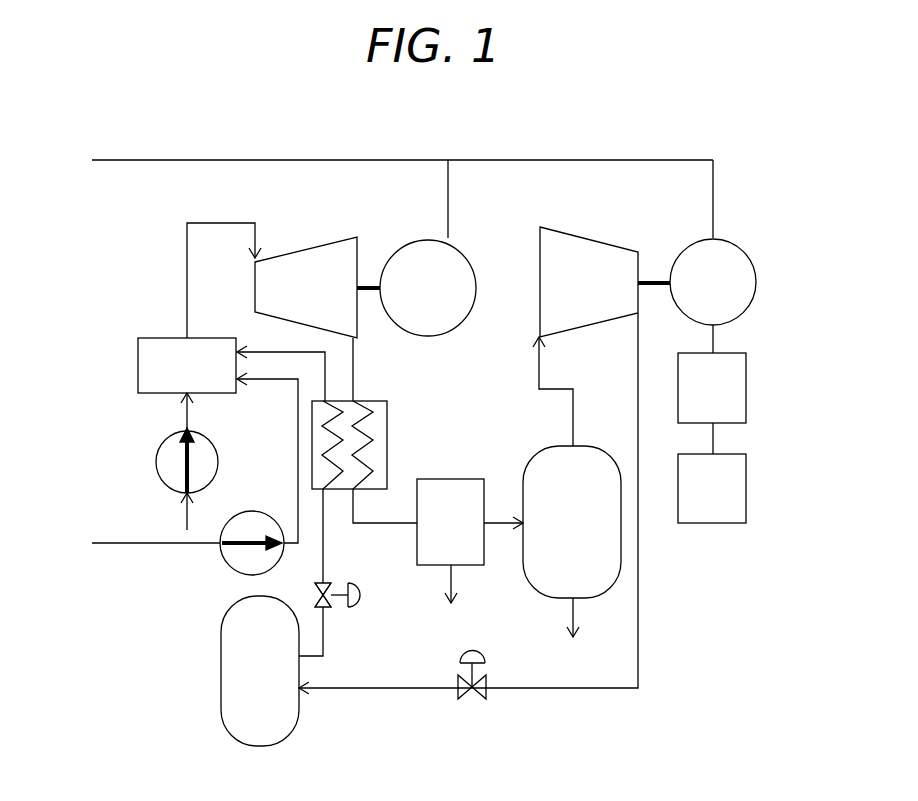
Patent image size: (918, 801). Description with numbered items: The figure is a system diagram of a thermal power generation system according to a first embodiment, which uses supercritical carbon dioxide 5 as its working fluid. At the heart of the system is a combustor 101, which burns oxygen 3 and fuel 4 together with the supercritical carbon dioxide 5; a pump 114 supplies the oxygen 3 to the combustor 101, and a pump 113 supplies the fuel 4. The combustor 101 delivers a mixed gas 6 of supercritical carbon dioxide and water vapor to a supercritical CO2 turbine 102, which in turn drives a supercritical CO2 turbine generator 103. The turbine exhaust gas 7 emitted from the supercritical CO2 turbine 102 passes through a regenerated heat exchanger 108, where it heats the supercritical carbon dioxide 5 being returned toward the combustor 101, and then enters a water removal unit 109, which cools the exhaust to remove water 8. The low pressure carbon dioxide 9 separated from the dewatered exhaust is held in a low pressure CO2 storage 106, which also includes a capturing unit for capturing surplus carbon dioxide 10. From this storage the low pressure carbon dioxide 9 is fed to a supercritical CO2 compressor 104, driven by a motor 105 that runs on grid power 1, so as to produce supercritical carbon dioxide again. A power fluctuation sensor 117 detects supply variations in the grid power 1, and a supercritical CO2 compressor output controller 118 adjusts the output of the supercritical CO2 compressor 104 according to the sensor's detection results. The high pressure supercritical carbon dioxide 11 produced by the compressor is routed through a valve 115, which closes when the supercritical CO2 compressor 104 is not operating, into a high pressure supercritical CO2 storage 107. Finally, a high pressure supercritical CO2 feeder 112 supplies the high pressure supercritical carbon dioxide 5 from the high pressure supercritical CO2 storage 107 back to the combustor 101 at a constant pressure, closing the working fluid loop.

The grid power 1 is at (150, 160).
The oxygen 3 is at (150, 545).
The fuel 4 is at (186, 518).
The supercritical carbon dioxide 5 is at (268, 350).
The mixed gas 6 is at (205, 222).
The turbine exhaust gas 7 is at (353, 378).
The water 8 is at (450, 578).
The low pressure carbon dioxide 9 is at (539, 358).
The surplus carbon dioxide 10 is at (572, 612).
The high pressure supercritical carbon dioxide 11 is at (638, 642).
The combustor 101 is at (159, 338).
The supercritical CO2 turbine 102 is at (310, 250).
The supercritical CO2 turbine generator 103 is at (420, 238).
The supercritical CO2 compressor 104 is at (588, 237).
The motor 105 is at (730, 241).
The low pressure CO2 storage 106 is at (589, 445).
The high pressure supercritical CO2 storage 107 is at (221, 713).
The regenerated heat exchanger 108 is at (388, 428).
The water removal unit 109 is at (450, 479).
The high pressure supercritical CO2 feeder 112 is at (358, 608).
The pump 113 is at (161, 442).
The pump 114 is at (250, 511).
The valve 115 is at (487, 697).
The power fluctuation sensor 117 is at (746, 488).
The supercritical CO2 compressor output controller 118 is at (746, 388).